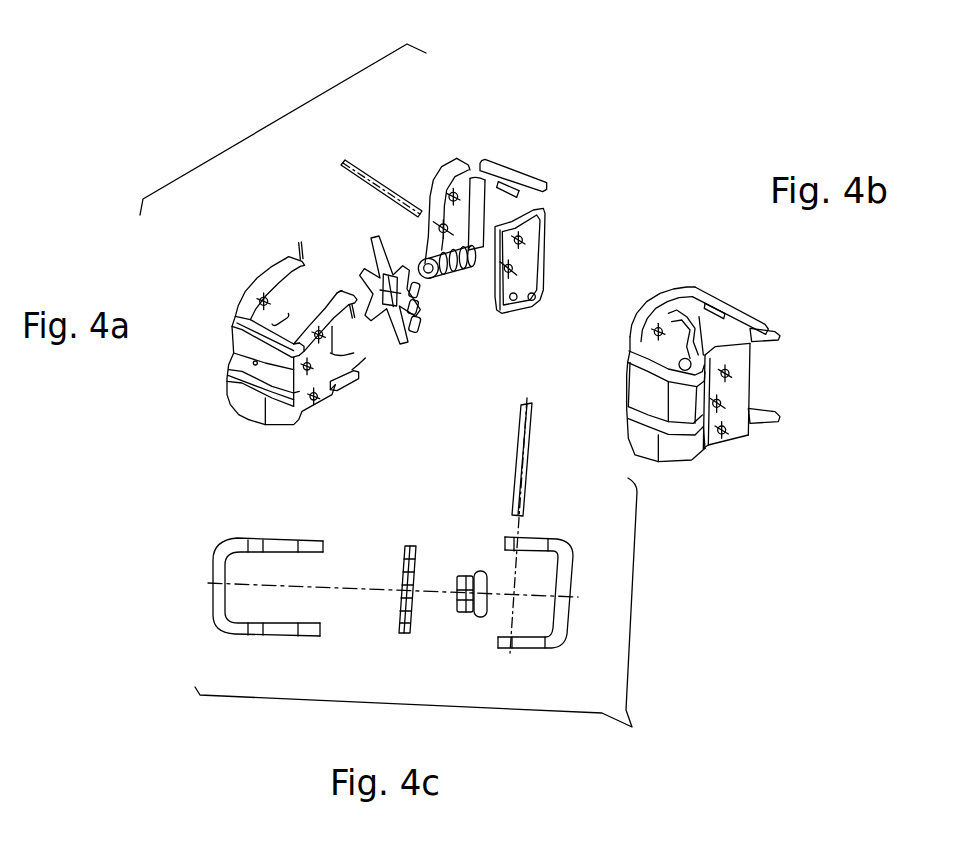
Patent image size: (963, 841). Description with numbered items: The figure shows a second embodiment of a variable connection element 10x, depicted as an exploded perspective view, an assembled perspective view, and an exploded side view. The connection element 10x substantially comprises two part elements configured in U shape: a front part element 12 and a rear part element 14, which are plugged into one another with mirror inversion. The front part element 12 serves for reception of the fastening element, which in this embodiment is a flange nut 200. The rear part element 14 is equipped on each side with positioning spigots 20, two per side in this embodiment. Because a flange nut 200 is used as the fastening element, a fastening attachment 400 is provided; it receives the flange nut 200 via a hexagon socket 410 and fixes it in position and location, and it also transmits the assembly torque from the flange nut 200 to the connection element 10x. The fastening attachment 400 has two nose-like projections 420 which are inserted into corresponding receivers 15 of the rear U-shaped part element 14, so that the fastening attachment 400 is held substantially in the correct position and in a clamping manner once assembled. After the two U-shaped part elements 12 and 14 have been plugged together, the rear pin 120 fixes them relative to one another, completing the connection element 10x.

In FIG. 4A, the connection element 10x is at (277, 120).
In FIG. 4B, the connection element 10x is at (840, 381).
In FIG. 4C, the connection element 10x is at (438, 614).
In FIG. 4A, the front part element 12 is at (501, 235).
In FIG. 4B, the front part element 12 is at (749, 367).
In FIG. 4C, the front part element 12 is at (564, 627).
In FIG. 4A, the rear part element 14 is at (289, 357).
In FIG. 4B, the rear part element 14 is at (646, 374).
In FIG. 4C, the rear part element 14 is at (267, 542).
In FIG. 4A, the receivers 15 is at (342, 345).
In FIG. 4A, the positioning spigots 20 is at (326, 325).
In FIG. 4B, the positioning spigots 20 is at (777, 376).
In FIG. 4A, the rear pin 120 is at (357, 176).
In FIG. 4C, the rear pin 120 is at (526, 494).
In FIG. 4A, the flange nut 200 is at (472, 301).
In FIG. 4C, the flange nut 200 is at (472, 574).
In FIG. 4A, the fastening attachment 400 is at (441, 317).
In FIG. 4B, the fastening attachment 400 is at (722, 314).
In FIG. 4C, the fastening attachment 400 is at (401, 570).
In FIG. 4A, the hexagon socket 410 is at (399, 351).
In FIG. 4A, the nose-like projections 420 is at (400, 288).